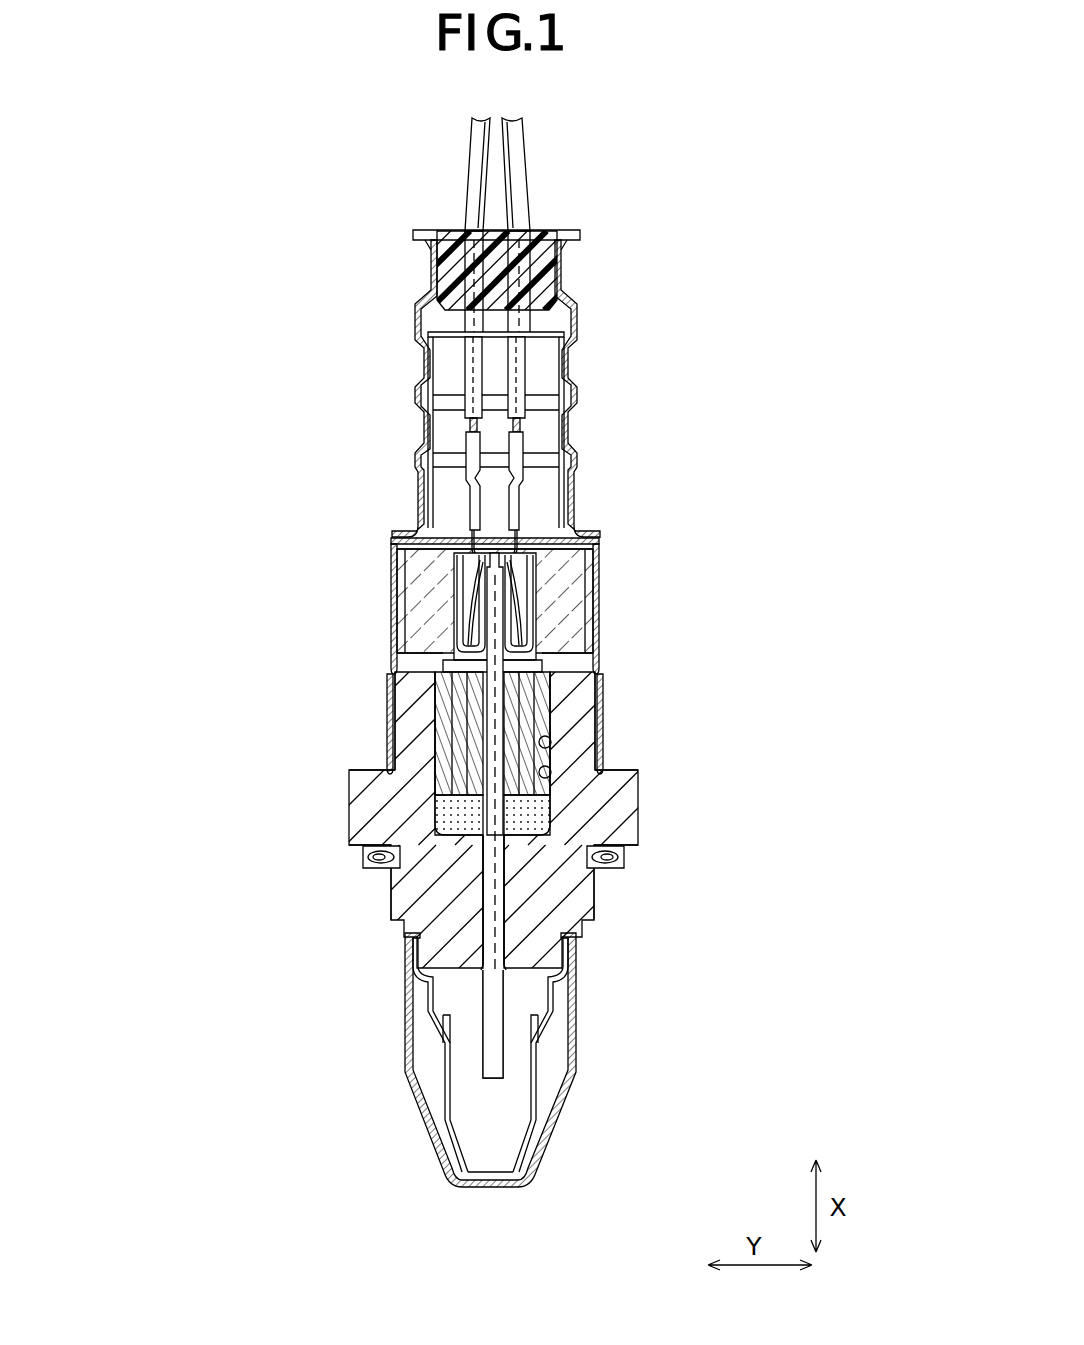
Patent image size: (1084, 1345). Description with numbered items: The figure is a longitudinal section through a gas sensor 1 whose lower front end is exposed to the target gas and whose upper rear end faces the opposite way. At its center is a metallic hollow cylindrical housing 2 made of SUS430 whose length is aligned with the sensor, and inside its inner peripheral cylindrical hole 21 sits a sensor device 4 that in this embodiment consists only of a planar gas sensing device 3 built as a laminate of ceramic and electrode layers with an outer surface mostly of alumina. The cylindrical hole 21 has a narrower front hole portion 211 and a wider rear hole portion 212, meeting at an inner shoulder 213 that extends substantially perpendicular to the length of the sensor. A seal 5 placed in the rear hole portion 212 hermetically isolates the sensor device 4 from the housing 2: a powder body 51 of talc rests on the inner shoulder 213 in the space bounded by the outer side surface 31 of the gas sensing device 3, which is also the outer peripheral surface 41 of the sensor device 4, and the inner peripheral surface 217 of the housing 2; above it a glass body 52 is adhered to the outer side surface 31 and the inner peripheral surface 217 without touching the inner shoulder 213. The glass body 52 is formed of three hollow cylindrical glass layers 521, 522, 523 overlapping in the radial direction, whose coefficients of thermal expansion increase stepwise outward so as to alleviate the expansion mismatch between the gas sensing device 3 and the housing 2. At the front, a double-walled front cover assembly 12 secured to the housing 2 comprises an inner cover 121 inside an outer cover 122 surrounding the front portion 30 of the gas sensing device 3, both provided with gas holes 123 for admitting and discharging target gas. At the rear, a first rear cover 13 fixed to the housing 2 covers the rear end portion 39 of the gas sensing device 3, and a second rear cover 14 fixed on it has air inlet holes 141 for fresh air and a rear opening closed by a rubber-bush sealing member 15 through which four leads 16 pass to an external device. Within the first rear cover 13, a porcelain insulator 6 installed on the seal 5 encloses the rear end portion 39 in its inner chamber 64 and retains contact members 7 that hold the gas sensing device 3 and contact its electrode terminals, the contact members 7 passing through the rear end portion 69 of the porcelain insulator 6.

The gas sensor 1 is at (606, 154).
The housing 2 is at (410, 792).
The gas sensing device 3 is at (483, 880).
The sensor device 4 is at (493, 900).
The seal 5 is at (540, 718).
The porcelain insulator 6 is at (599, 562).
The contact members 7 is at (540, 632).
The front cover assembly 12 is at (404, 958).
The first rear cover 13 is at (577, 500).
The second rear cover 14 is at (415, 398).
The sealing member 15 is at (556, 258).
The leads 16 is at (520, 347).
The cylindrical hole 21 is at (766, 765).
The front portion 30 is at (496, 1068).
The outer side surface 31 is at (500, 617).
The rear end portion 39 is at (565, 575).
The outer peripheral surface 41 is at (490, 893).
The powder body 51 is at (447, 812).
The glass body 52 is at (229, 643).
The inner chamber 64 is at (455, 625).
The rear end portion 69 is at (396, 543).
The inner cover 121 is at (533, 1130).
The outer cover 122 is at (428, 1118).
The gas holes 123 is at (577, 1012).
The air inlet holes 141 is at (415, 322).
The front hole portion 211 is at (540, 872).
The rear hole portion 212 is at (556, 783).
The inner shoulder 213 is at (560, 832).
The inner peripheral surface 217 is at (592, 742).
The glass layer 521 is at (473, 698).
The glass layer 522 is at (460, 723).
The glass layer 523 is at (447, 757).